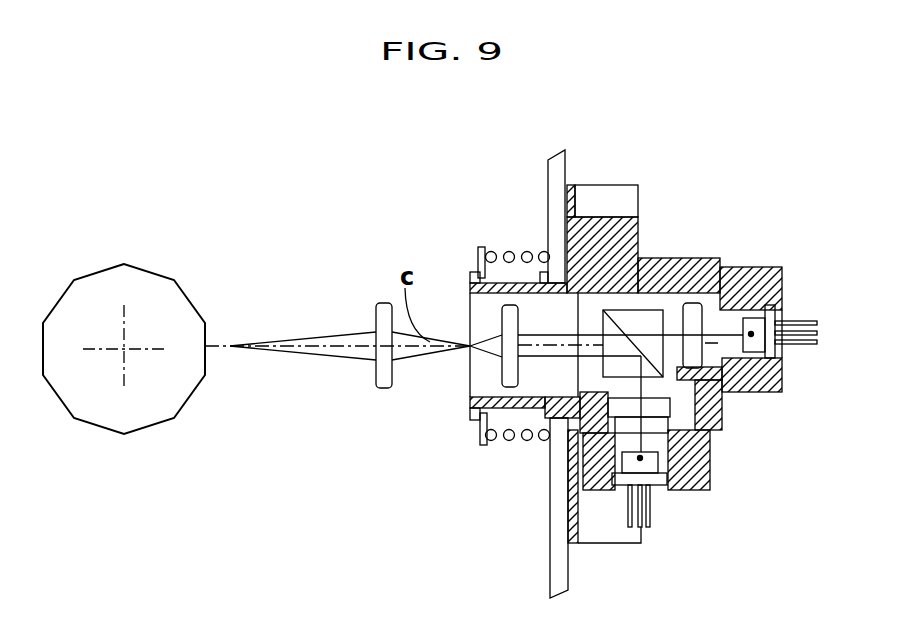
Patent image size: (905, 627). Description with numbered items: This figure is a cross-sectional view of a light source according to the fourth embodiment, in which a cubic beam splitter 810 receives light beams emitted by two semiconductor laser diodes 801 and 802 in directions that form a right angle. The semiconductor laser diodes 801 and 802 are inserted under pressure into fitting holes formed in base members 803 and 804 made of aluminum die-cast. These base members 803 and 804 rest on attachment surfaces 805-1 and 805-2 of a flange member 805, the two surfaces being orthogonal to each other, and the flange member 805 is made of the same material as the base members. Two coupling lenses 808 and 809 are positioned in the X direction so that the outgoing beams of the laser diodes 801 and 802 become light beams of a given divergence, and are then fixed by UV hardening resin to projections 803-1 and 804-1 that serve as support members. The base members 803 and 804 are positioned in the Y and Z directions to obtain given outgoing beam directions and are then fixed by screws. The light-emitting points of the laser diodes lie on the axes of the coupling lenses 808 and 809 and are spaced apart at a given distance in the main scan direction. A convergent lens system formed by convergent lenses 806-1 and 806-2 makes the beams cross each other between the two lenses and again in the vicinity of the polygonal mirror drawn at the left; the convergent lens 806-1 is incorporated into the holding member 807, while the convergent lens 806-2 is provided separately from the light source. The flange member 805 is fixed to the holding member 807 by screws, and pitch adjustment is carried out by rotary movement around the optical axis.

The semiconductor laser diode 801 is at (778, 315).
The semiconductor laser diode 802 is at (660, 482).
The base member 803 is at (767, 270).
The projection 803-1 is at (722, 402).
The base member 804 is at (707, 468).
The projection 804-1 is at (627, 402).
The flange member 805 is at (602, 232).
The attachment surface 805-1 is at (722, 262).
The attachment surface 805-2 is at (718, 430).
The convergent lens 806-1 is at (500, 312).
The convergent lens 806-2 is at (383, 302).
The holding member 807 is at (548, 275).
The coupling lens 808 is at (690, 315).
The coupling lens 809 is at (572, 462).
The cubic beam splitter 810 is at (603, 360).